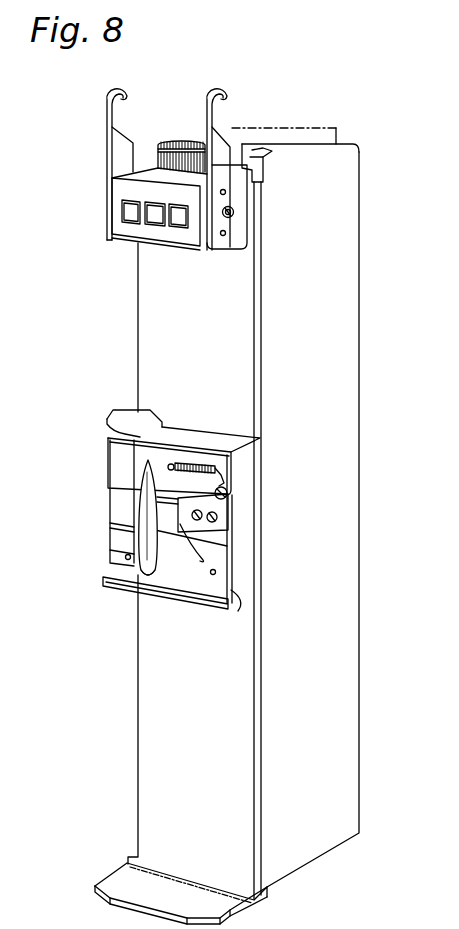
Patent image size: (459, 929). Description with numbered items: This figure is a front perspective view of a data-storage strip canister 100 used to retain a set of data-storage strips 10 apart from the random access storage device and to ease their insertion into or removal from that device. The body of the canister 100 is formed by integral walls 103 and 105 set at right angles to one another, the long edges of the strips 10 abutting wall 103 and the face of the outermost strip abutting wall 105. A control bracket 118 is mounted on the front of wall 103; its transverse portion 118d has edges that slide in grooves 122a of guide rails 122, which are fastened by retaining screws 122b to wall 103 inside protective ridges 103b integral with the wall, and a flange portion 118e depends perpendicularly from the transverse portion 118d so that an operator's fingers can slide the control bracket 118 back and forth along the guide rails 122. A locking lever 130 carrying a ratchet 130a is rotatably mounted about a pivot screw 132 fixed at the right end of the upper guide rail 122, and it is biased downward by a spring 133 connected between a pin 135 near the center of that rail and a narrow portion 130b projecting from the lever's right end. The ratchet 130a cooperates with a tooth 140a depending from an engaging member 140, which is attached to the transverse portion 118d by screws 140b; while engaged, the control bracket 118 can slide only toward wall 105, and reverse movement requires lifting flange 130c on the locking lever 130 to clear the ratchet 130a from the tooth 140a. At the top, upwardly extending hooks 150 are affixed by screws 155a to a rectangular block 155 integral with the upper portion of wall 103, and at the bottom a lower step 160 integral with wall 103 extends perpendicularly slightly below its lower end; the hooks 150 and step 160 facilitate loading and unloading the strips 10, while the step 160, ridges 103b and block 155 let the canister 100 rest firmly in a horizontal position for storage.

The data-storage strip canister 100 is at (359, 475).
The wall 103 is at (177, 667).
The protective ridges 103b is at (198, 466).
The wall 105 is at (350, 606).
The lower step 160 is at (122, 887).
The data-storage strips 10 is at (151, 147).
The upwardly extending hooks 150 is at (105, 93).
The rectangular block 155 is at (113, 240).
The screws 155a is at (235, 212).
The locking lever 130 is at (121, 473).
The ratchet 130a is at (182, 503).
The narrow portion 130b is at (224, 474).
The flange 130c is at (107, 437).
The pivot screw 132 is at (228, 492).
The spring 133 is at (193, 444).
The pin 135 is at (170, 464).
The engaging member 140 is at (235, 524).
The tooth 140a is at (193, 570).
The screws 140b is at (226, 541).
The guide rails 122 is at (142, 450).
The grooves 122a is at (120, 523).
The retaining screws 122b is at (125, 562).
The control bracket 118 is at (156, 551).
The transverse portion 118d is at (130, 527).
The flange portion 118e is at (128, 570).